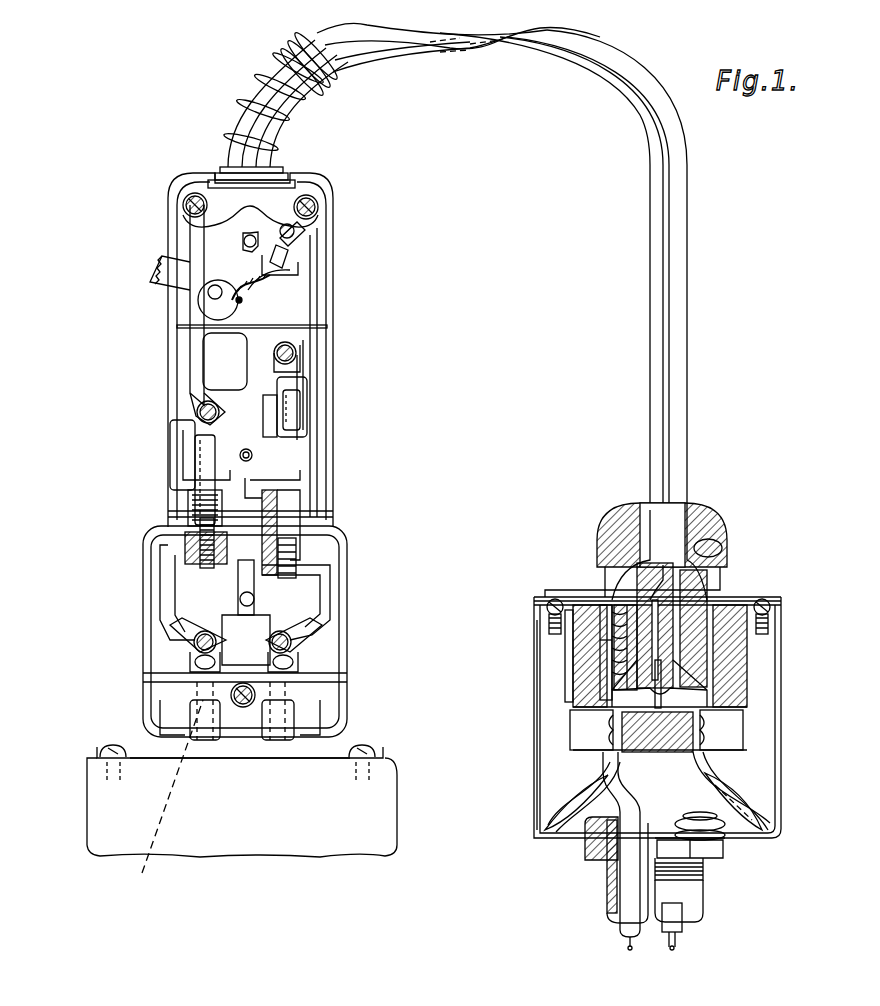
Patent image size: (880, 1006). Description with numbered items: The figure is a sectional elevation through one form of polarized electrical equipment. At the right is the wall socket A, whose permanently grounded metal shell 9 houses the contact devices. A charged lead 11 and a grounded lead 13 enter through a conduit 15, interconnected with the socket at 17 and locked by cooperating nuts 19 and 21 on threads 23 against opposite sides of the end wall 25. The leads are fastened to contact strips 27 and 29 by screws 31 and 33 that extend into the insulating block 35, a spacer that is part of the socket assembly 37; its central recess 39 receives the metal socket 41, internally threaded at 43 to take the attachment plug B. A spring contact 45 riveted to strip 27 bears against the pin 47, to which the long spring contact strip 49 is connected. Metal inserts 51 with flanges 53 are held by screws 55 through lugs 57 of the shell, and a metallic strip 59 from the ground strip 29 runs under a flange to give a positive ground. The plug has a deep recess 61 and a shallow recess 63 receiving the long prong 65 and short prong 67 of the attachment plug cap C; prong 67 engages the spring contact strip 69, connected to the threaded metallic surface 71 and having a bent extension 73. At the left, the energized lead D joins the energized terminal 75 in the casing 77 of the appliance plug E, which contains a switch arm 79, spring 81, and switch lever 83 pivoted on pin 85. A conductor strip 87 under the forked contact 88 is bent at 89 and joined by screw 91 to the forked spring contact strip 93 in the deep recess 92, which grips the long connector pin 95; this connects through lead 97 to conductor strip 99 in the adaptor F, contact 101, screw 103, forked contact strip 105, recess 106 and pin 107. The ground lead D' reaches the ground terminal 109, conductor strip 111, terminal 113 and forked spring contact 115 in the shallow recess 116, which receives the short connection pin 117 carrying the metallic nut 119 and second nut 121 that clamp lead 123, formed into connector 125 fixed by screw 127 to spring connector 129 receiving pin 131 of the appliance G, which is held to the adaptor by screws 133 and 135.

The metal shell 9 is at (782, 711).
The charged lead 11 is at (718, 828).
The grounded lead 13 is at (622, 927).
The conduit 15 is at (704, 897).
The interconnection 17 is at (587, 843).
The nut 19 is at (715, 852).
The nut 21 is at (707, 825).
The threads 23 is at (705, 872).
The end wall 25 is at (745, 838).
The contact strip 27 is at (690, 720).
The ground contact strip 29 is at (570, 722).
The screw 31 is at (737, 742).
The screw 33 is at (593, 740).
The insulating block 35 is at (657, 746).
The socket assembly 37 is at (748, 660).
The central recess 39 is at (718, 693).
The metal socket 41 is at (610, 690).
The internal threads 43 is at (555, 583).
The spring contact 45 is at (763, 606).
The pin 47 is at (612, 660).
The long spring contact strip 49 is at (737, 578).
The metal insert 51 is at (572, 638).
The flange 53 is at (537, 598).
The screw 55 is at (556, 599).
The lug 57 is at (573, 623).
The metallic strip 59 is at (545, 607).
The deep recess 61 is at (723, 543).
The shallow recess 63 is at (573, 647).
The long prong 65 is at (717, 508).
The short prong 67 is at (605, 583).
The spring contact strip 69 is at (627, 685).
The threaded metallic surface 71 is at (593, 580).
The bent extension 73 is at (603, 570).
The energized terminal 75 is at (320, 196).
The casing 77 is at (333, 250).
The switch arm 79 is at (330, 240).
The spring 81 is at (258, 292).
The switch lever 83 is at (160, 284).
The pin 85 is at (208, 295).
The conductor strip 87 is at (318, 275).
The forked contact 88 is at (295, 245).
The bend 89 is at (298, 349).
The screw 91 is at (312, 353).
The deep recess 92 is at (315, 360).
The forked spring contact strip 93 is at (308, 395).
The long connector pin 95 is at (312, 436).
The lead 97 is at (280, 506).
The conductor strip 99 is at (320, 578).
The contact 101 is at (310, 636).
The screw 103 is at (291, 641).
The forked contact strip 105 is at (313, 662).
The recess 106 is at (262, 652).
The pin 107 is at (288, 690).
The ground terminal 109 is at (193, 195).
The conductor strip 111 is at (196, 240).
The terminal 113 is at (203, 404).
The forked spring contact 115 is at (196, 432).
The shallow recess 116 is at (183, 458).
The connection pin 117 is at (198, 513).
The metallic nut 119 is at (183, 540).
The second nut 121 is at (185, 557).
The lead 123 is at (168, 578).
The connector 125 is at (188, 630).
The screw 127 is at (192, 644).
The spring connector 129 is at (188, 667).
The pin 131 is at (160, 802).
The screw 133 is at (127, 744).
The screw 135 is at (377, 744).
The wall socket A is at (785, 664).
The attachment plug B is at (740, 565).
The attachment plug cap C is at (610, 512).
The energized lead D is at (630, 297).
The ground lead D' is at (551, 299).
The appliance plug E is at (336, 315).
The adaptor F is at (355, 527).
The appliance G is at (398, 817).